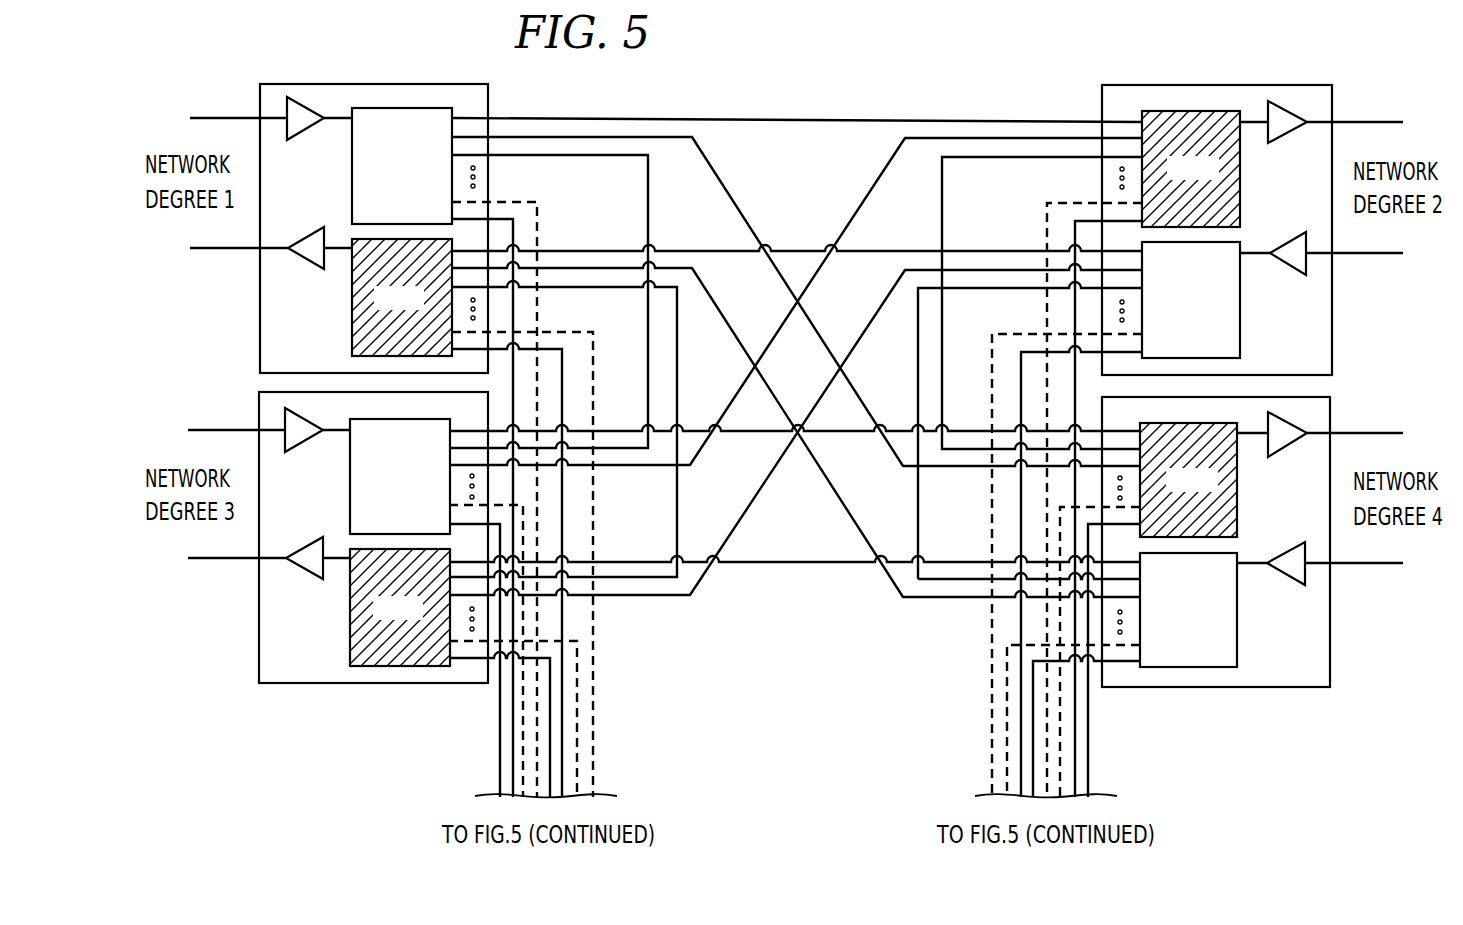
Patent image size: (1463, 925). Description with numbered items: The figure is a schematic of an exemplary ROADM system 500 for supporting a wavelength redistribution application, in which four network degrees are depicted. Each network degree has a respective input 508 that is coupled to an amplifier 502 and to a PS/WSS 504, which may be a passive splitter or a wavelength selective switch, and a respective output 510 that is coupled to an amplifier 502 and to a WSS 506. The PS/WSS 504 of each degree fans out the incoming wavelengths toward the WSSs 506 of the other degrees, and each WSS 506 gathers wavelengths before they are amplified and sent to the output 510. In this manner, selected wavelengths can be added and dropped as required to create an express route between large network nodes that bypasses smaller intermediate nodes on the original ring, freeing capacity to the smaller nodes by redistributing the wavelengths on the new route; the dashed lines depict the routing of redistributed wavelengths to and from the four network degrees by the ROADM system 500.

The ROADM system 500 is at (846, 94).
The amplifier 502 is at (292, 141).
The PS/WSS 504 is at (350, 164).
The WSS 506 is at (350, 320).
The input 508 is at (1378, 600).
The output 510 is at (1382, 100).